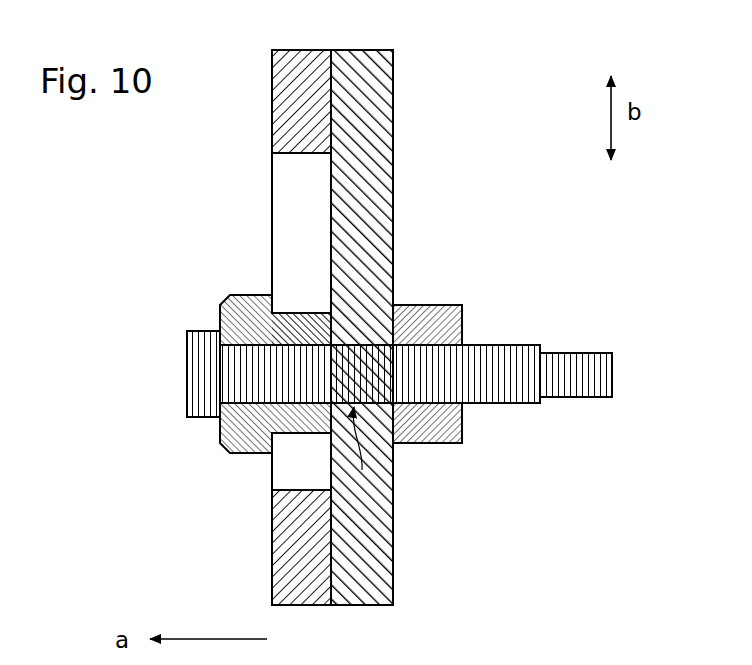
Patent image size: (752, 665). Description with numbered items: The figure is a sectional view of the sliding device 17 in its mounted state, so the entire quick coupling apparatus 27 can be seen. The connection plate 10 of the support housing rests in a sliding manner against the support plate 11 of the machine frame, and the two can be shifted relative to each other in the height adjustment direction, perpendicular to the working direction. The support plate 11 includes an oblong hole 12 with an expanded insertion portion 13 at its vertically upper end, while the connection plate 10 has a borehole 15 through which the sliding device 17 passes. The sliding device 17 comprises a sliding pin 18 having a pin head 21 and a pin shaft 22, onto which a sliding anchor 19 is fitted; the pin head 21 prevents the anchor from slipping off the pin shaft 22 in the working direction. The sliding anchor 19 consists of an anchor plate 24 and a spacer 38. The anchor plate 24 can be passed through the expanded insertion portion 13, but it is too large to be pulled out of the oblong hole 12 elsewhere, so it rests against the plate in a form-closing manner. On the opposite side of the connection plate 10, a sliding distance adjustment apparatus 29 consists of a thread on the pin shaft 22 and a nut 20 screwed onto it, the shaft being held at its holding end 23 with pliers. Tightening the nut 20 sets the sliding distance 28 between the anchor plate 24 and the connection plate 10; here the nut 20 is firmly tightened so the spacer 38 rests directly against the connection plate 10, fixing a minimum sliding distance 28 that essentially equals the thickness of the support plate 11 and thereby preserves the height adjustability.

The connection plate 10 is at (388, 108).
The support plate 11 is at (275, 62).
The oblong hole 12 is at (293, 462).
The expanded insertion portion 13 is at (270, 153).
The borehole 15 is at (393, 500).
The sliding device 17 is at (155, 298).
The sliding pin 18 is at (503, 338).
The sliding anchor 19 is at (228, 307).
The nut 20 is at (442, 318).
The pin head 21 is at (197, 397).
The pin shaft 22 is at (490, 403).
The holding end 23 is at (577, 397).
The anchor plate 24 is at (225, 450).
The quick coupling apparatus 27 is at (460, 173).
The sliding distance 28 is at (328, 265).
The sliding distance adjustment apparatus 29 is at (490, 278).
The spacer 38 is at (303, 325).